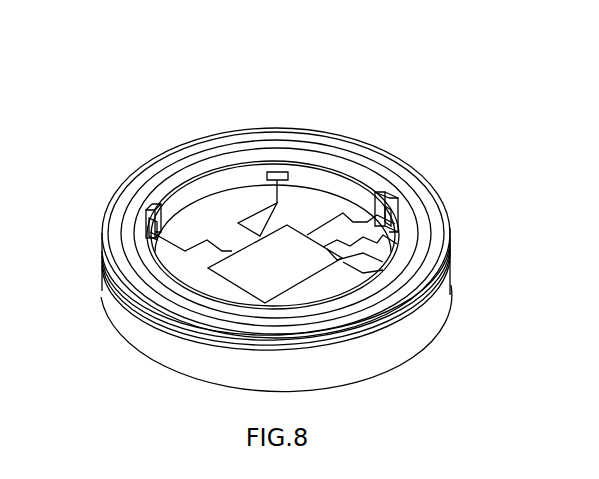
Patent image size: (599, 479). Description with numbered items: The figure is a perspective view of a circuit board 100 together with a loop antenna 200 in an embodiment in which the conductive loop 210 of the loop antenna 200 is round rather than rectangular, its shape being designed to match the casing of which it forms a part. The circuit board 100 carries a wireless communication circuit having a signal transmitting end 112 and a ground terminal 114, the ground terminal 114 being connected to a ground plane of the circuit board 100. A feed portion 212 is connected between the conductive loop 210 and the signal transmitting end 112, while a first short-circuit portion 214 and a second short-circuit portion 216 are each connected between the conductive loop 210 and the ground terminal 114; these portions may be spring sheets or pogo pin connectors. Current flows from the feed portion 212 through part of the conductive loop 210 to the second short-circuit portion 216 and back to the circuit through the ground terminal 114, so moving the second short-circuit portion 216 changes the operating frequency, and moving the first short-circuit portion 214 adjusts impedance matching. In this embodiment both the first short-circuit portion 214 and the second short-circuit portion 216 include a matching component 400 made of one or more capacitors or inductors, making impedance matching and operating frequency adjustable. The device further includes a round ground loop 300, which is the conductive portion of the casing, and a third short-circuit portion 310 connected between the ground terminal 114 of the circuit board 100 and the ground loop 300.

The loop antenna 200 is at (120, 160).
The conductive loop 210 is at (158, 156).
The feed portion 212 is at (425, 232).
The first short-circuit portion 214 is at (403, 195).
The second short-circuit portion 216 is at (145, 210).
The matching component 400 is at (148, 224).
The ground terminal 114 is at (233, 250).
The third short-circuit portion 310 is at (277, 172).
The circuit board 100 is at (357, 207).
The signal transmitting end 112 is at (375, 262).
The ground loop 300 is at (430, 334).